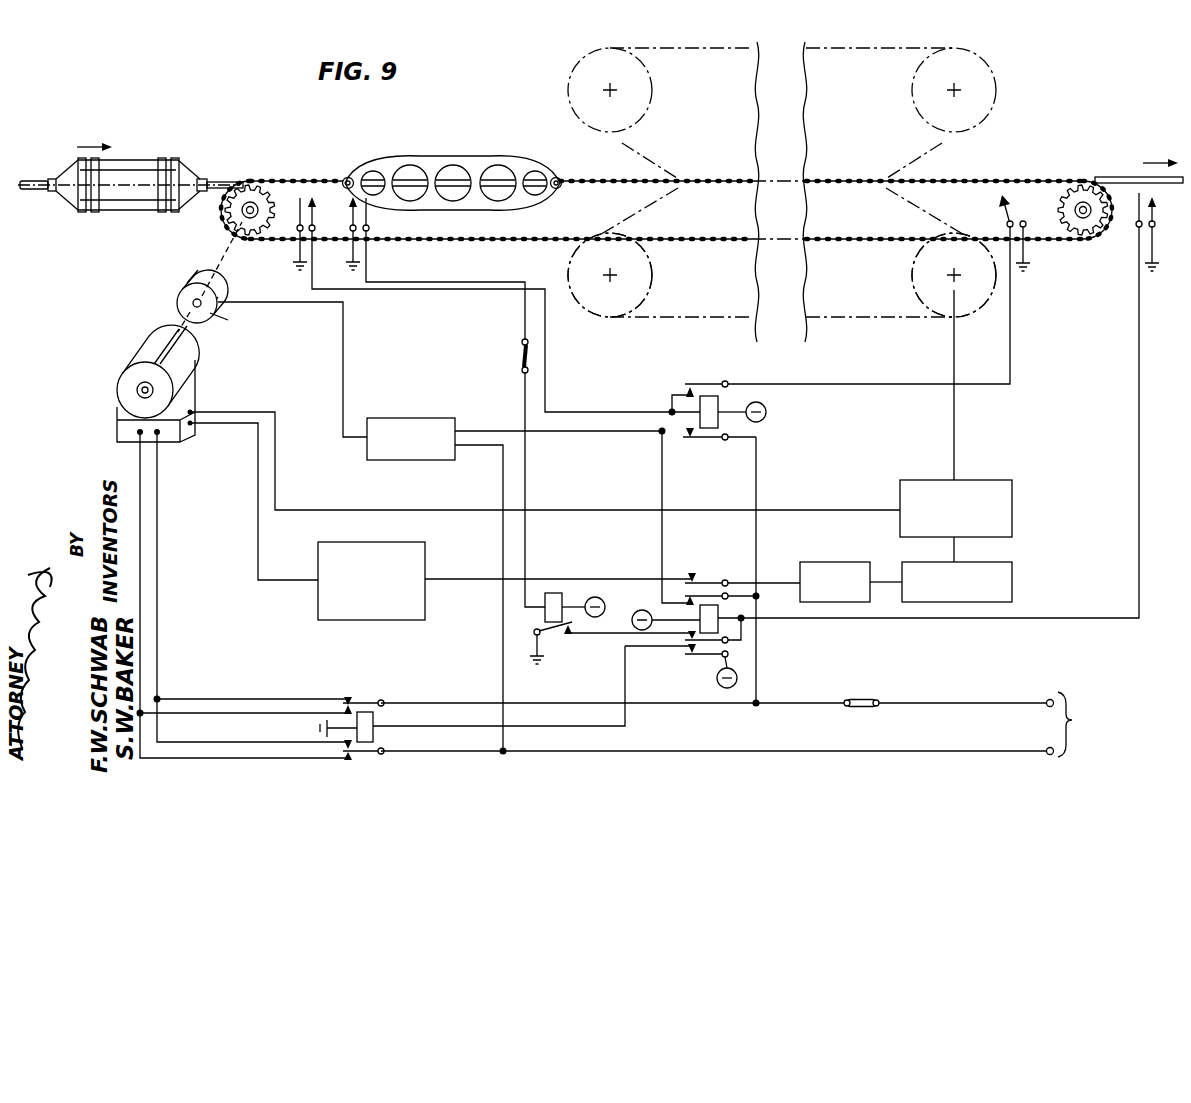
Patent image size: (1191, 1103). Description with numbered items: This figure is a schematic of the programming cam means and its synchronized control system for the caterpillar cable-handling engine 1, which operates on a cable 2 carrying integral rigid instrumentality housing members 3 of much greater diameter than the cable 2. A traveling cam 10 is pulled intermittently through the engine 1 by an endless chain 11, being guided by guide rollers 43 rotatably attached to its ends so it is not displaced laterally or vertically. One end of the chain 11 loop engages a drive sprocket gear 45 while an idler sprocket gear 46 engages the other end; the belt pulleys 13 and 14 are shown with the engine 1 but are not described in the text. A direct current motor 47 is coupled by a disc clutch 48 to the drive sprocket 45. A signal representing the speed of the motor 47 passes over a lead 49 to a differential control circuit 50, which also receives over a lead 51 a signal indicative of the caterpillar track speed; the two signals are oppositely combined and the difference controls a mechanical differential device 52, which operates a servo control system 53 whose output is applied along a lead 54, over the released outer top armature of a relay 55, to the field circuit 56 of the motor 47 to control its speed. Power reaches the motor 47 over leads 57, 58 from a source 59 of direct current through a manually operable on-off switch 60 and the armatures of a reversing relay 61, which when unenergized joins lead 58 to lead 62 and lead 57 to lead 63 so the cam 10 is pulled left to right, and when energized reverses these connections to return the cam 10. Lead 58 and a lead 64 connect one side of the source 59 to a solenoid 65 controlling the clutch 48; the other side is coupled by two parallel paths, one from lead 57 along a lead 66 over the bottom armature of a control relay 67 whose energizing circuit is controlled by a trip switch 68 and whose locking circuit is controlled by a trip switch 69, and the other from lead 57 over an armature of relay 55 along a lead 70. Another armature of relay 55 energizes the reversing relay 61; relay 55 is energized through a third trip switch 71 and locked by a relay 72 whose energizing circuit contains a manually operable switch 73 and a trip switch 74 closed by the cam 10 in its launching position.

The caterpillar cable-handling engine 1 is at (722, 50).
The cable 2 is at (217, 182).
The rigid instrumentality housing member 3 is at (132, 167).
The traveling cam 10 is at (443, 158).
The endless chain 11 is at (993, 177).
The pulley 13 is at (650, 277).
The pulley 14 is at (915, 274).
The guide roller 43 is at (350, 173).
The drive sprocket gear 45 is at (230, 218).
The idler sprocket gear 46 is at (1088, 228).
The direct current motor 47 is at (152, 340).
The disc clutch 48 is at (190, 293).
The lead 49 is at (275, 473).
The differential control circuit 50 is at (992, 486).
The lead 51 is at (958, 432).
The mechanical differential device 52 is at (1003, 566).
The servo control system 53 is at (834, 568).
The lead 54 is at (775, 582).
The relay 55 is at (717, 613).
The field circuit 56 is at (318, 556).
The lead 57 is at (792, 701).
The lead 58 is at (783, 749).
The source of direct current 59 is at (1048, 742).
The manually operable on-off switch 60 is at (863, 698).
The reversing relay 61 is at (373, 721).
The lead 62 is at (142, 590).
The lead 63 is at (158, 612).
The lead 64 is at (502, 555).
The solenoid 65 is at (393, 423).
The lead 66 is at (757, 462).
The control relay 67 is at (717, 403).
The trip switch 68 is at (313, 218).
The trip switch 69 is at (1008, 222).
The lead 70 is at (662, 476).
The trip switch 71 is at (1155, 220).
The relay 72 is at (562, 598).
The manually operable switch 73 is at (522, 363).
The trip switch 74 is at (363, 217).